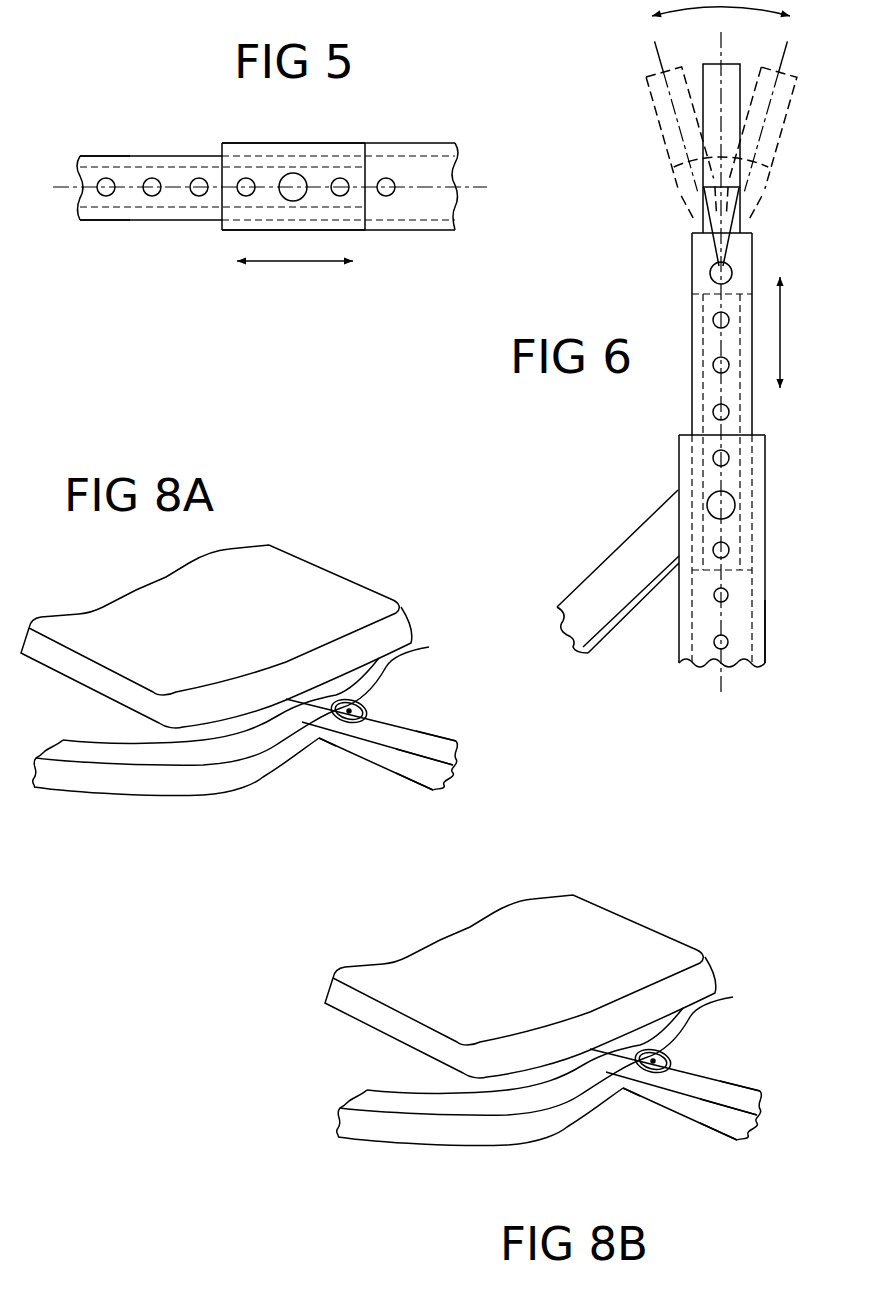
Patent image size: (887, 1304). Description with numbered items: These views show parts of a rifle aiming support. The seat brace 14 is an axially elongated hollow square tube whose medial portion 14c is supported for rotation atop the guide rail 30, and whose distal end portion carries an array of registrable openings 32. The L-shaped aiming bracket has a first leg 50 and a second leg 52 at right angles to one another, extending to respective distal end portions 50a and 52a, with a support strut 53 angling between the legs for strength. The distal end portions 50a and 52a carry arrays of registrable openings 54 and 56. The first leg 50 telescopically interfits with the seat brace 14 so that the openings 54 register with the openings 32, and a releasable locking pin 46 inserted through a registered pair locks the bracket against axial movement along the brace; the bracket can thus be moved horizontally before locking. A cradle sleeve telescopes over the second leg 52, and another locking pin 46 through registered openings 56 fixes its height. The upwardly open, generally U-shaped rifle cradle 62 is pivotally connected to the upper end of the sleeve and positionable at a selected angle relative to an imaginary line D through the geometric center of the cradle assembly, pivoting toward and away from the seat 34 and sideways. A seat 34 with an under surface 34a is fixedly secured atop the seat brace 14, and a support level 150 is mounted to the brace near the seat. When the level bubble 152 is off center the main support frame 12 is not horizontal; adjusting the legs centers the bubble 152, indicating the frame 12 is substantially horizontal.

In FIG. 8A, the main support frame 12 is at (49, 872).
In FIG. 8B, the main support frame 12 is at (367, 1182).
In FIG. 5, the seat brace 14 is at (92, 118).
In FIG. 8A, the seat brace 14 is at (395, 717).
In FIG. 8B, the seat brace 14 is at (742, 1072).
In FIG. 5, the medial portion 14c is at (117, 155).
In FIG. 8A, the medial portion 14c is at (459, 746).
In FIG. 8B, the medial portion 14c is at (745, 1093).
In FIG. 8A, the guide rail 30 is at (231, 766).
In FIG. 8B, the guide rail 30 is at (463, 1148).
In FIG. 5, the registrable openings 32 is at (111, 181).
In FIG. 8A, the seat 34 is at (216, 596).
In FIG. 8B, the seat 34 is at (571, 891).
In FIG. 8A, the under surface 34a is at (214, 611).
In FIG. 8B, the under surface 34a is at (608, 930).
In FIG. 5, the releasable locking pin 46 is at (282, 195).
In FIG. 6, the releasable locking pin 46 is at (710, 273).
In FIG. 5, the first leg 50 is at (436, 140).
In FIG. 5, the distal end portion 50a is at (345, 142).
In FIG. 6, the second leg 52 is at (767, 590).
In FIG. 6, the distal end portion 52a is at (767, 645).
In FIG. 6, the support strut 53 is at (612, 543).
In FIG. 5, the registrable openings 54 is at (386, 196).
In FIG. 6, the registrable openings 56 is at (727, 650).
In FIG. 6, the rifle cradle 62 is at (763, 147).
In FIG. 8A, the support level 150 is at (293, 786).
In FIG. 8B, the support level 150 is at (625, 1090).
In FIG. 8A, the level bubble 152 is at (407, 665).
In FIG. 8B, the level bubble 152 is at (653, 1061).
In FIG. 6, the imaginary line D is at (721, 55).